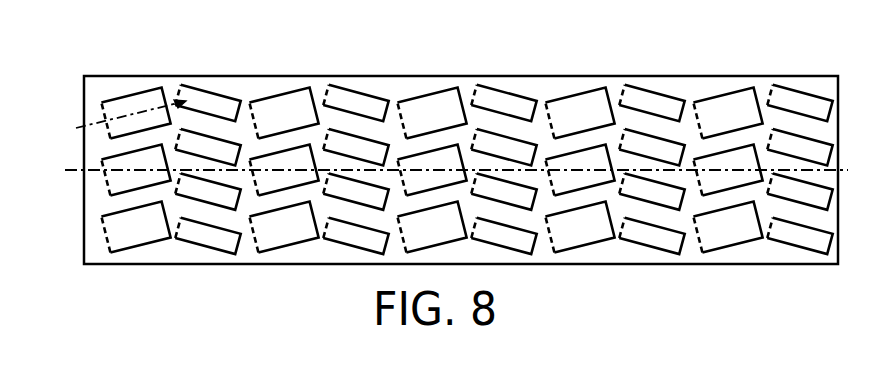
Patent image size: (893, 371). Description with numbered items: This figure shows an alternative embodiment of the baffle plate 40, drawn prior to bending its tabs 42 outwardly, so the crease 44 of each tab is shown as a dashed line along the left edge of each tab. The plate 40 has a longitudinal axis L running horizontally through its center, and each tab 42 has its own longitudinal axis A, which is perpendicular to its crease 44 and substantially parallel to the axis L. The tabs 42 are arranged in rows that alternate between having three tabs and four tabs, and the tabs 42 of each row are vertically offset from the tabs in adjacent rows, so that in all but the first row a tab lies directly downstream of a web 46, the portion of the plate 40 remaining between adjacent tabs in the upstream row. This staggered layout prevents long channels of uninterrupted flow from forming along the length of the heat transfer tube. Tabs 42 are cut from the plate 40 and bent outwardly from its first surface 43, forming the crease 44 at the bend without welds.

The baffle plate 40 is at (257, 72).
The tab 42 is at (346, 93).
The first surface 43 is at (606, 252).
The crease 44 is at (102, 103).
The web 46 is at (201, 124).
The longitudinal axis of tab A is at (120, 123).
The longitudinal axis of plate L is at (445, 174).